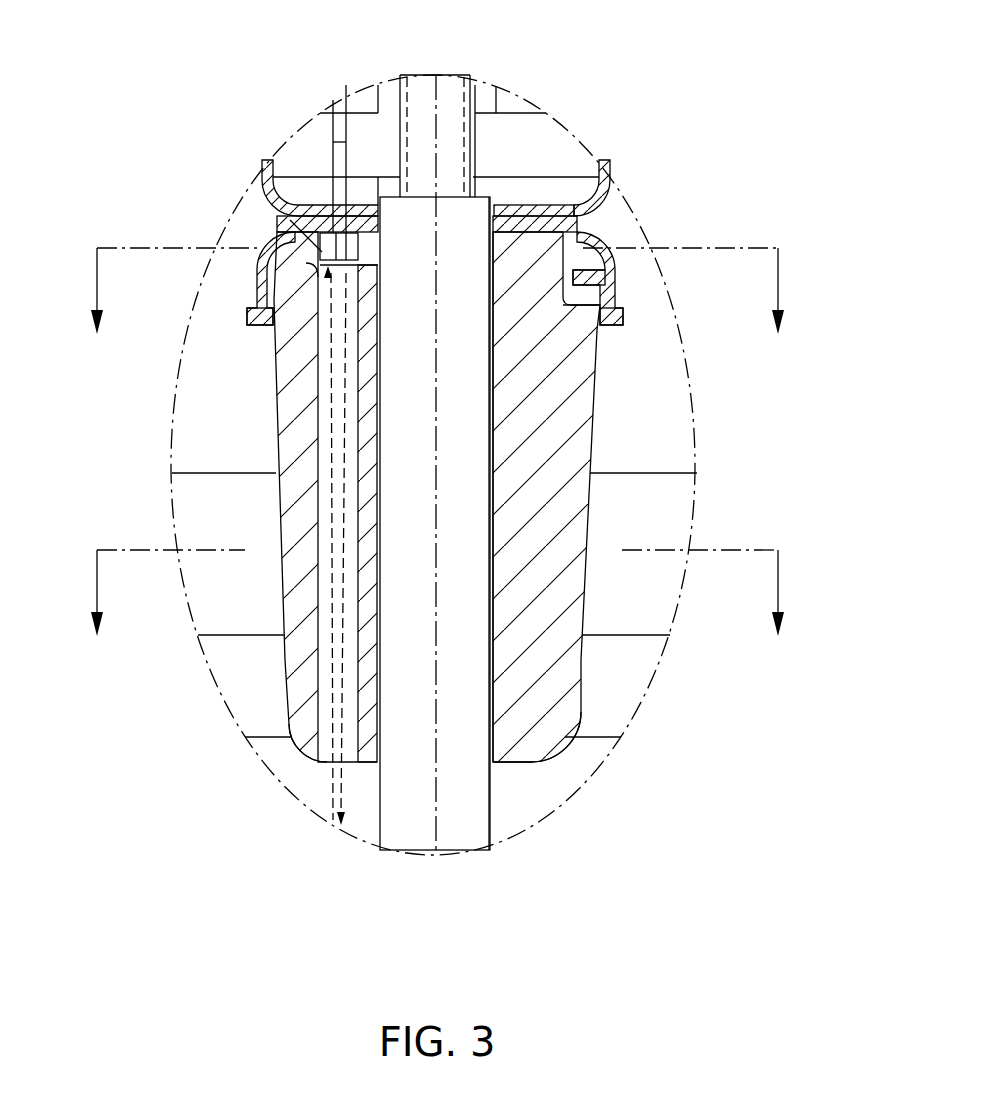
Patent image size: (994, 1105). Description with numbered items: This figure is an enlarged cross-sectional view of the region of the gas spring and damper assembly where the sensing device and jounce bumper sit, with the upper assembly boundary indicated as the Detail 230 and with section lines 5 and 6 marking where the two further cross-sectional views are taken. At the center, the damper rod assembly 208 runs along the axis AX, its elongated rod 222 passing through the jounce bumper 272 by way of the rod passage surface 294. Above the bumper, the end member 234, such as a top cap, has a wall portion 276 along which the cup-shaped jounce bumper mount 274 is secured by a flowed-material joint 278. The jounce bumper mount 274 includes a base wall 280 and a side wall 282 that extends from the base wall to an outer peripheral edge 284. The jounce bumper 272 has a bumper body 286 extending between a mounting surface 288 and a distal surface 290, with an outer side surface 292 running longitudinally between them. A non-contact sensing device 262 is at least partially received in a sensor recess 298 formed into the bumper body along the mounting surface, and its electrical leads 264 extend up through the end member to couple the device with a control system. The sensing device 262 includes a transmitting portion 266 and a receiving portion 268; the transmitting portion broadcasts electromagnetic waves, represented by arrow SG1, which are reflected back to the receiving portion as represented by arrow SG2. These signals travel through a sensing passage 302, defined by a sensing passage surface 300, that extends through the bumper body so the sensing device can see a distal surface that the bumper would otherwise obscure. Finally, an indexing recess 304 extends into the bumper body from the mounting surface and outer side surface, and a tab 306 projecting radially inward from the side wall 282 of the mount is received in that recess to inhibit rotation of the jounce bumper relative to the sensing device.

The damper rod assembly 208 is at (494, 408).
The elongated rod 222 is at (468, 515).
The sensor assembly 230 is at (528, 100).
The end member 234 is at (625, 195).
The non-contact sensing device 262 is at (300, 260).
The electrical conductors or leads 264 is at (332, 157).
The transmitting portion 266 is at (350, 190).
The receiving portion 268 is at (272, 217).
The jounce bumper 272 is at (265, 518).
The jounce bumper mount 274 is at (635, 234).
The wall portion 276 is at (513, 212).
The flowed-material joint 278 is at (596, 217).
The base wall 280 is at (513, 210).
The side wall 282 is at (256, 297).
The outer peripheral edge 284 is at (625, 318).
The bumper body 286 is at (553, 700).
The mounting surface 288 is at (548, 226).
The distal surface 290 is at (510, 763).
The outer side surface 292 is at (588, 560).
The rod passage surface 294 is at (493, 648).
The sensor recess 298 is at (372, 248).
The sensing passage surface 300 is at (316, 638).
The sensing passage 302 is at (320, 756).
The indexing recess 304 is at (573, 310).
The tab 306 is at (590, 282).
The broadcast signals SG1 is at (345, 440).
The reflected signals SG2 is at (320, 387).
The axis AX is at (436, 832).
The section line 5 is at (437, 309).
The section line 6 is at (437, 612).